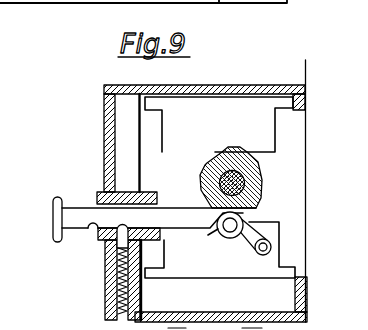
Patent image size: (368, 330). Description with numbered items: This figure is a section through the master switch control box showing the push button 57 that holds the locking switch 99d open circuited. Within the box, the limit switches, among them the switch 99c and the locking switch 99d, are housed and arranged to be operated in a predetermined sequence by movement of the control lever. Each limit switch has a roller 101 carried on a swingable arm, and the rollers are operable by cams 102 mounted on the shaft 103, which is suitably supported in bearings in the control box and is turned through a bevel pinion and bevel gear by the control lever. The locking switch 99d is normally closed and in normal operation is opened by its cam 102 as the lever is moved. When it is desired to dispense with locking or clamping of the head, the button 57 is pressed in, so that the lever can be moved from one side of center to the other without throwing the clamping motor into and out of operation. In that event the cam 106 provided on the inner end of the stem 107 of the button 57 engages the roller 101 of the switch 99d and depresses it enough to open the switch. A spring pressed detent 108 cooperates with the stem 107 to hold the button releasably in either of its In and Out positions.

The button 57 is at (52, 208).
The limit switch 99c is at (237, 102).
The locking switch 99d is at (272, 232).
The roller 101 is at (229, 239).
The cam 102 is at (194, 163).
The shaft 103 is at (255, 164).
The cam 106 is at (208, 235).
The stem 107 is at (77, 228).
The spring pressed detent 108 is at (120, 243).